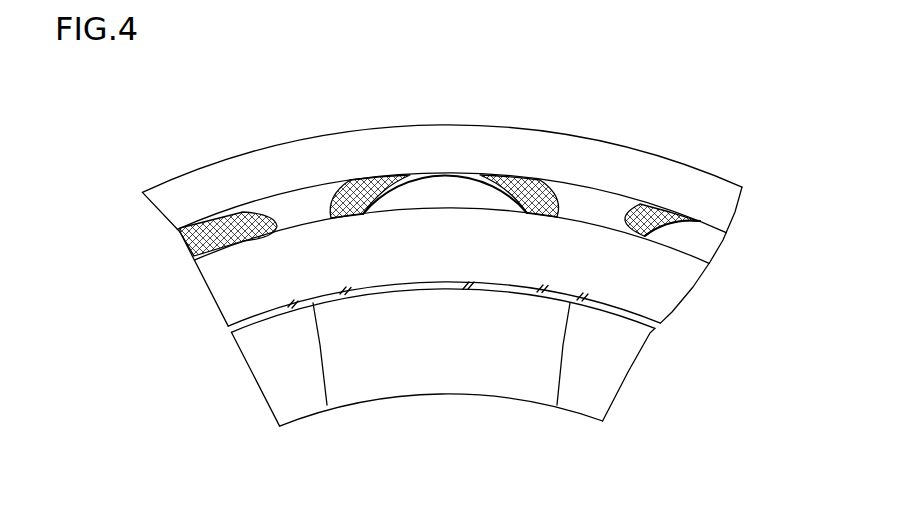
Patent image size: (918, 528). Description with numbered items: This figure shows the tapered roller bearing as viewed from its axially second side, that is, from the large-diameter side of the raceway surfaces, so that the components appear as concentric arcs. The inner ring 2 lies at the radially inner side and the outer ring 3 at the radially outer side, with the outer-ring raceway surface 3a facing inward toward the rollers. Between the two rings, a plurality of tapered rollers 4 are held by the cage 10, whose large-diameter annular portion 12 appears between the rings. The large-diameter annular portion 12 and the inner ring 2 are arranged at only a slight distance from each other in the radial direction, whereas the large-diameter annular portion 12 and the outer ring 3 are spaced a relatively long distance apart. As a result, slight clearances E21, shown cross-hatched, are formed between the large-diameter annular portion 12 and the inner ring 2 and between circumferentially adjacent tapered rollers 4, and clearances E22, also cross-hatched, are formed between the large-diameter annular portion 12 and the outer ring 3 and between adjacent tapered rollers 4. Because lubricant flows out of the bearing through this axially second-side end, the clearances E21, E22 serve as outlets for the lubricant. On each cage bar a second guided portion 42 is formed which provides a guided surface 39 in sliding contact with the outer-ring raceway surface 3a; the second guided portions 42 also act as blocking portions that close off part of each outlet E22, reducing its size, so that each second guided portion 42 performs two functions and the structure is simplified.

The inner ring 2 is at (387, 402).
The outer ring 3 is at (402, 142).
The outer-ring raceway surface 3a is at (368, 313).
The tapered roller 4 is at (180, 227).
The cage 10 is at (462, 292).
The large-diameter annular portion 12 is at (438, 247).
The guided surface 39 is at (267, 190).
The second guided portion 42 is at (313, 197).
The clearance E21 is at (327, 405).
The clearance E22 is at (247, 240).